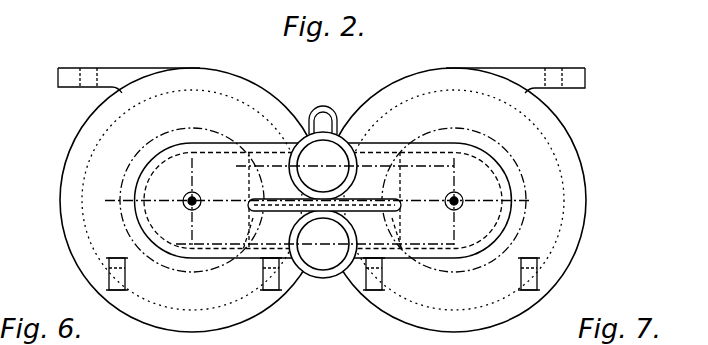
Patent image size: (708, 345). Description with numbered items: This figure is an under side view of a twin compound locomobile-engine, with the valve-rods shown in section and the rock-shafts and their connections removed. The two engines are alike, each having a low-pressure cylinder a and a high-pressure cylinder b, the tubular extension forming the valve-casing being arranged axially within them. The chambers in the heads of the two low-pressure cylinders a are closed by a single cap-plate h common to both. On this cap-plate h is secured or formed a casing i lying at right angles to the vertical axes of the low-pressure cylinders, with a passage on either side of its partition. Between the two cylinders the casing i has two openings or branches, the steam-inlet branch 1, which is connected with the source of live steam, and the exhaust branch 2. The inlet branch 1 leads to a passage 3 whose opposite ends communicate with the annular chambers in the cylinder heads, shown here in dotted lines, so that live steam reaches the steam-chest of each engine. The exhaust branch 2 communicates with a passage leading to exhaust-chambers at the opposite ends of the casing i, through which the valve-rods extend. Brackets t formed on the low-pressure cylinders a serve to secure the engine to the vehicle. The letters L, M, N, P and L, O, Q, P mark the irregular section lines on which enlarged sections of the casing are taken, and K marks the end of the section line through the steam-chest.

The steam-inlet branch 1 is at (323, 166).
The exhaust branch 2 is at (323, 244).
The passage 3 is at (284, 140).
The low-pressure cylinder a is at (317, 200).
The high-pressure cylinder b is at (372, 235).
The cap-plate h is at (80, 135).
The casing i is at (251, 143).
The bracket t is at (321, 69).
The section line I K is at (326, 193).
The section line L M N P / L O Q P L is at (97, 191).
The section line L M N P M is at (195, 178).
The section line L M N P N is at (454, 178).
The section line L M N P / L O Q P is at (533, 197).
The section line L O Q P O is at (176, 241).
The section line L O Q P Q is at (468, 243).